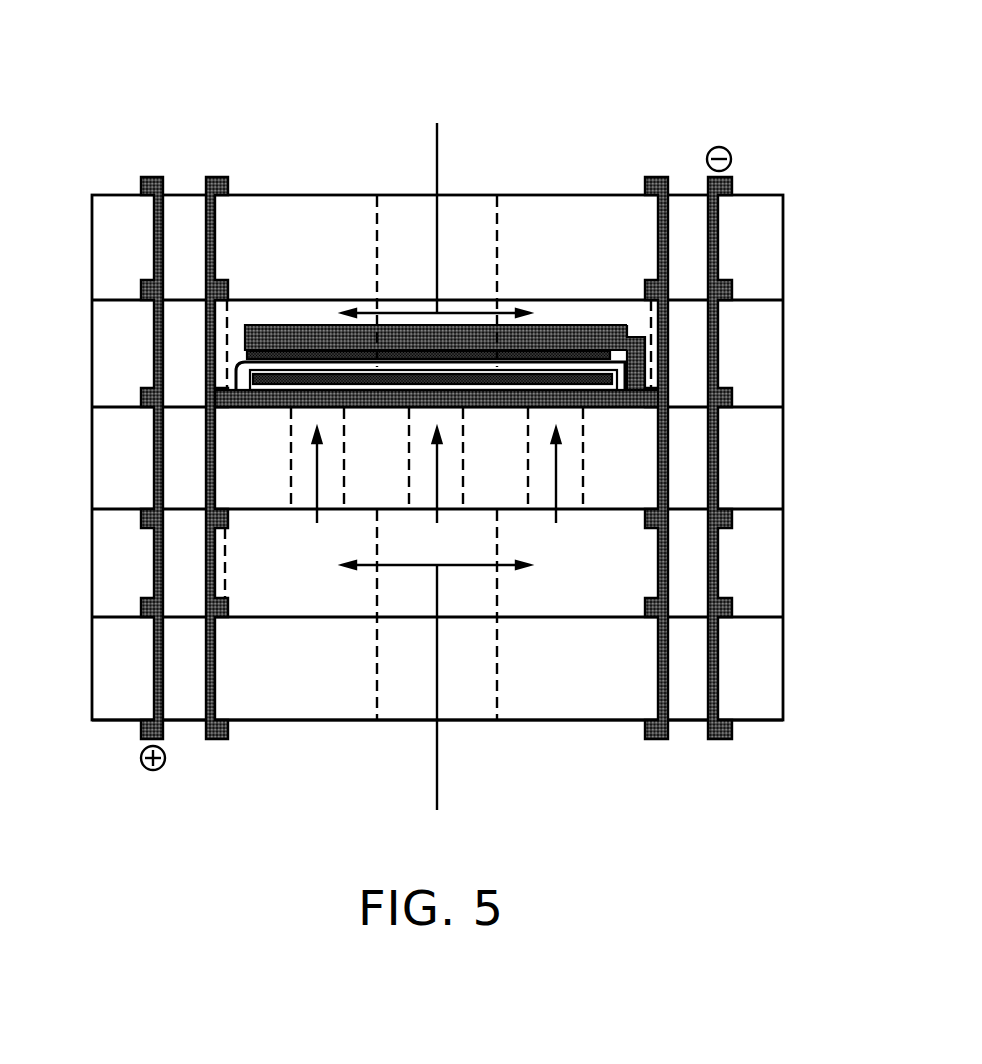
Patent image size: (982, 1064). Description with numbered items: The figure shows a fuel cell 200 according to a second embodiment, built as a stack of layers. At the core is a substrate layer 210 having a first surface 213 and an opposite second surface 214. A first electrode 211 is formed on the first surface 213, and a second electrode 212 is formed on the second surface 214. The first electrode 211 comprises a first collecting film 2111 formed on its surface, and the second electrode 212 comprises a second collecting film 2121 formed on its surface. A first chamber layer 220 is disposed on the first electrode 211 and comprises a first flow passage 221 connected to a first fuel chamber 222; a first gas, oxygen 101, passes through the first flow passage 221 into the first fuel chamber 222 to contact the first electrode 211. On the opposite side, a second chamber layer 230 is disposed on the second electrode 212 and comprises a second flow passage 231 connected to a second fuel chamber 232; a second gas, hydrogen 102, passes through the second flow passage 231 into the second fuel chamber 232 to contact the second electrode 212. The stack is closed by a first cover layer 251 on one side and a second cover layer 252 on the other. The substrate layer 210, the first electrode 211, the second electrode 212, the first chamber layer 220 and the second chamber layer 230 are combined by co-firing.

The fuel cell 200 is at (90, 32).
The first collecting film 2111 is at (302, 345).
The first flow passage 221 is at (394, 216).
The first gas (oxygen) 101 is at (437, 157).
The first fuel chamber 222 is at (592, 310).
The first cover layer 251 is at (775, 248).
The first chamber layer 220 is at (775, 348).
The second surface 214 is at (265, 340).
The first electrode 211 is at (247, 356).
The first surface 213 is at (246, 378).
The substrate layer 210 is at (240, 388).
The second electrode 212 is at (242, 380).
The second collecting film 2121 is at (250, 398).
The second chamber layer 230 is at (791, 563).
The second flow passage 231 is at (401, 705).
The second gas (hydrogen) 102 is at (437, 783).
The second fuel chamber 232 is at (603, 602).
The second cover layer 252 is at (775, 672).